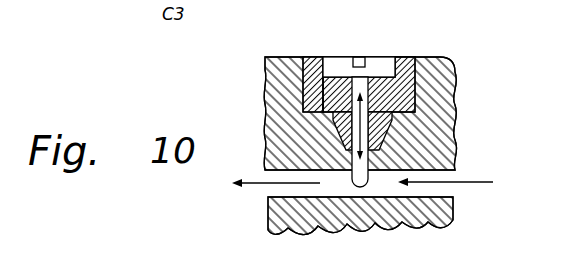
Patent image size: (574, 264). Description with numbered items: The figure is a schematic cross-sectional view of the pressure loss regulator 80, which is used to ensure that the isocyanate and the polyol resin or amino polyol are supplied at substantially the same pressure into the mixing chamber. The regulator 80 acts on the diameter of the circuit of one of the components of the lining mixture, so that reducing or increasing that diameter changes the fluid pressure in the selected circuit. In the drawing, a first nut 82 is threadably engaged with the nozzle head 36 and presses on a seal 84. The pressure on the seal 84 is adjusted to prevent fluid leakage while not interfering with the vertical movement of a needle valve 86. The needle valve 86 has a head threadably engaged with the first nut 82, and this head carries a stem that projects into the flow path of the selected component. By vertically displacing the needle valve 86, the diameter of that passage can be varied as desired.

The nozzle head 36 is at (430, 57).
The pressure loss regulator 80 is at (463, 93).
The first nut 82 is at (308, 57).
The seal 84 is at (333, 113).
The needle valve 86 is at (341, 57).